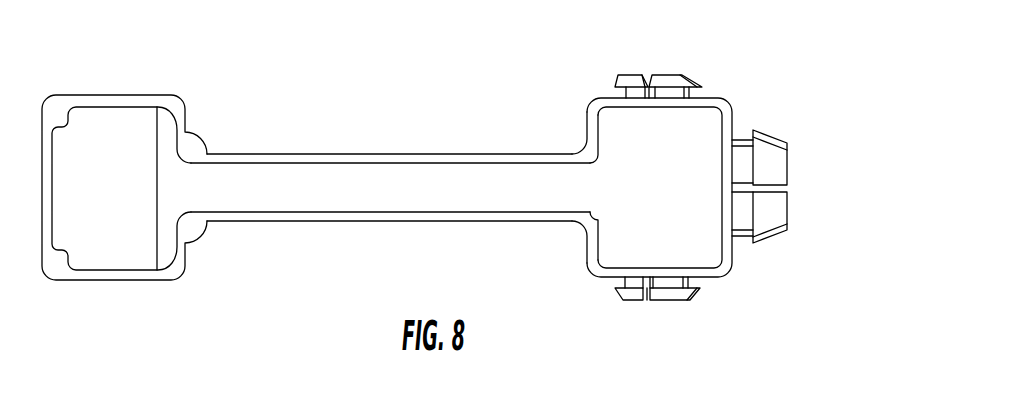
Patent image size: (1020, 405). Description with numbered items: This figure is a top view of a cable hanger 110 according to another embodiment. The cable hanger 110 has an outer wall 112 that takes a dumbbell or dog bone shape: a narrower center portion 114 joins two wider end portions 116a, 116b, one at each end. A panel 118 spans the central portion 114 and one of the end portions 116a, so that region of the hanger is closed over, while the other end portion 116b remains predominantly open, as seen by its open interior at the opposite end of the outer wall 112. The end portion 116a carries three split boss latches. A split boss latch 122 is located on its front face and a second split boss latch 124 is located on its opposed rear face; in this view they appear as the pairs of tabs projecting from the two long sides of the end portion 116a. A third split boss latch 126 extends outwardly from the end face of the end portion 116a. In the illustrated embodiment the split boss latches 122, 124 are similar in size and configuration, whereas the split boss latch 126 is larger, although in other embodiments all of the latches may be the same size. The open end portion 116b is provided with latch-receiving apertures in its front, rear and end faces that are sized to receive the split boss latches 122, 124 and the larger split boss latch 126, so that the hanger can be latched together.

The cable hanger 110 is at (555, 48).
The outer wall 112 is at (420, 154).
The center portion 114 is at (543, 133).
The end portion 116a is at (797, 248).
The end portion 116b is at (106, 283).
The panel 118 is at (490, 178).
The split boss latch 122 is at (673, 295).
The second split boss latch 124 is at (672, 80).
The third split boss latch 126 is at (778, 210).